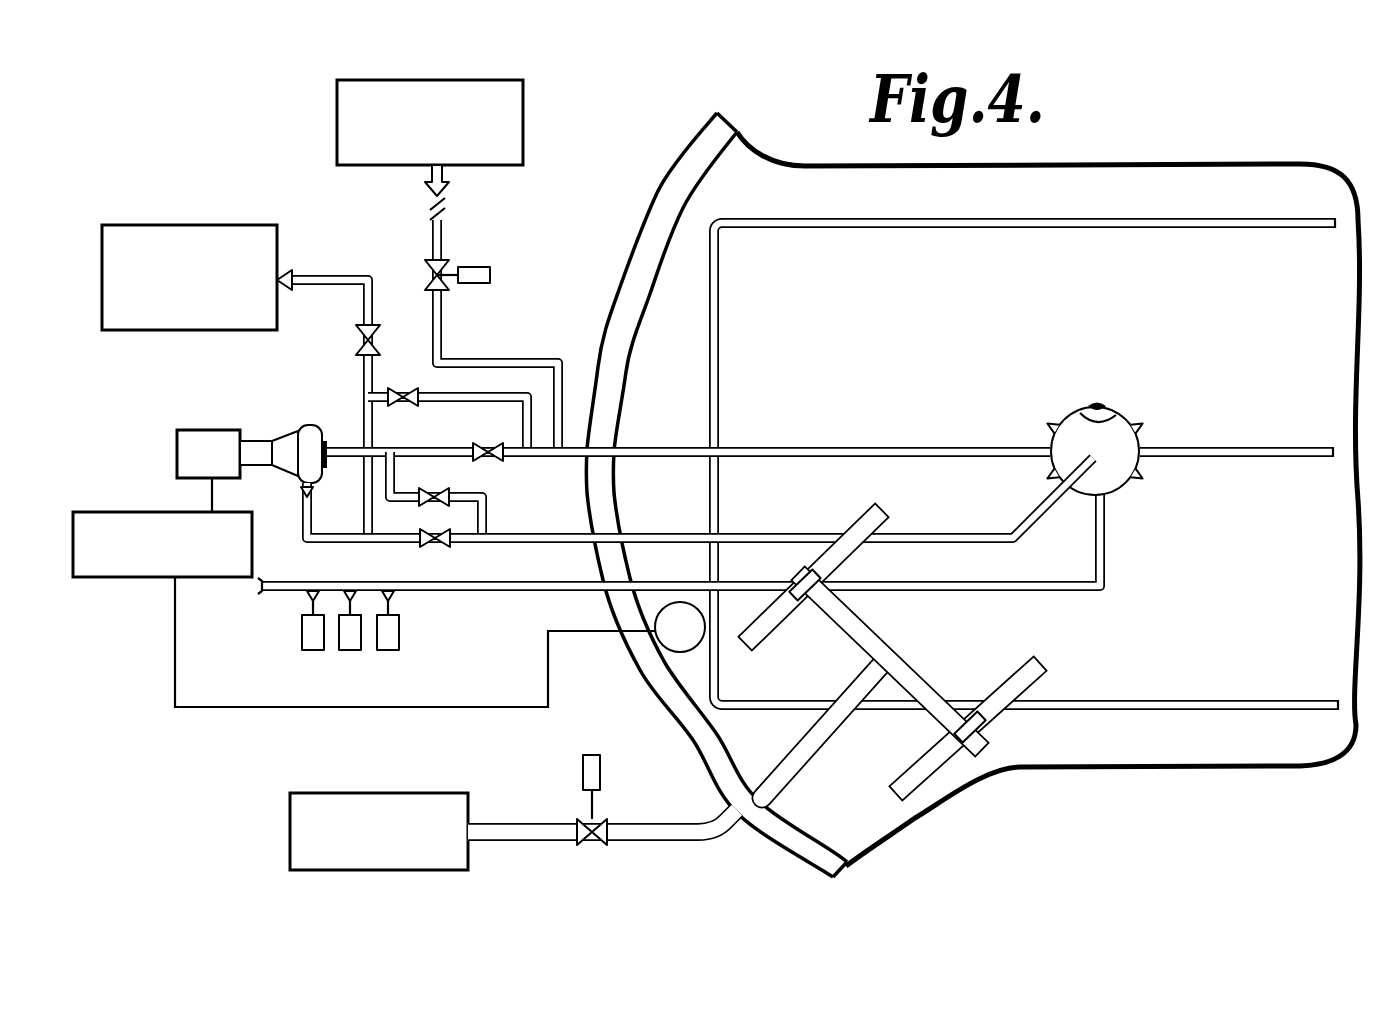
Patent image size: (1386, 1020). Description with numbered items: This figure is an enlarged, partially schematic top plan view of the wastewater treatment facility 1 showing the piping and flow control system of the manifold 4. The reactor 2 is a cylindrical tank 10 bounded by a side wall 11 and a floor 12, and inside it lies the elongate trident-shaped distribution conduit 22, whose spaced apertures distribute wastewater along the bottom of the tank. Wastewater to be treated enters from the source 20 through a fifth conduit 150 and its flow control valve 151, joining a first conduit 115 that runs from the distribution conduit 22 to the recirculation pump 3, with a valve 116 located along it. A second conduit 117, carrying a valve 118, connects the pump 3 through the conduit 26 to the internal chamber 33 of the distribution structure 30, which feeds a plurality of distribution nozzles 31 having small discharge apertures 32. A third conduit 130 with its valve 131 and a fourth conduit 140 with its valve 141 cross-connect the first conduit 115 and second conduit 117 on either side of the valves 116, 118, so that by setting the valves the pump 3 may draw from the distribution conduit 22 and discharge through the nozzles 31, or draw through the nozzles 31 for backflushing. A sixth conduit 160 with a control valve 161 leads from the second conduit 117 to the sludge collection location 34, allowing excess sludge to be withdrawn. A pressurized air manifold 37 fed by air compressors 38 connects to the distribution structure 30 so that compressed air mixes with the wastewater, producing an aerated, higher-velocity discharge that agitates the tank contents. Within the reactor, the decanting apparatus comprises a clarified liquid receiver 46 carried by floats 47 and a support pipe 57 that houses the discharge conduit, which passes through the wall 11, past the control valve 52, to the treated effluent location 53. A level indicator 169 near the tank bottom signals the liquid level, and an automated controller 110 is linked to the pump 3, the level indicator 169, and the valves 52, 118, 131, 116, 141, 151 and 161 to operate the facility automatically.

The wastewater treatment facility 1 is at (226, 130).
The reactor 2 is at (655, 195).
The recirculation pump 3 is at (300, 427).
The manifold 4 is at (342, 392).
The tank 10 is at (646, 691).
The side wall 11 is at (626, 366).
The floor 12 is at (1126, 177).
The source of wastewater to be treated 20 is at (522, 80).
The distribution conduit 22 is at (1190, 229).
The conduit 26 is at (983, 531).
The distribution structure 30 is at (1118, 481).
The distribution nozzle 31 is at (1044, 425).
The discharge aperture 32 is at (1097, 403).
The internal chamber 33 is at (1114, 412).
The sludge collection location 34 is at (277, 227).
The pressurized air manifold 37 is at (512, 592).
The air compressor 38 is at (388, 651).
The clarified liquid receiver 46 is at (874, 629).
The float 47 is at (846, 557).
The control valve 52 is at (608, 843).
The treated effluent discharge location 53 is at (290, 869).
The support pipe 57 is at (790, 761).
The automated controller 110 is at (135, 578).
The first conduit 115 is at (575, 461).
The valve 116 is at (486, 461).
The second conduit 117 is at (557, 534).
The valve 118 is at (450, 545).
The third conduit 130 is at (470, 505).
The valve 131 is at (428, 492).
The fourth conduit 140 is at (497, 402).
The valve 141 is at (410, 404).
The fifth conduit 150 is at (444, 331).
The flow control valve 151 is at (426, 274).
The sixth conduit 160 is at (330, 287).
The control valve 161 is at (354, 340).
The level indicator 169 is at (700, 648).